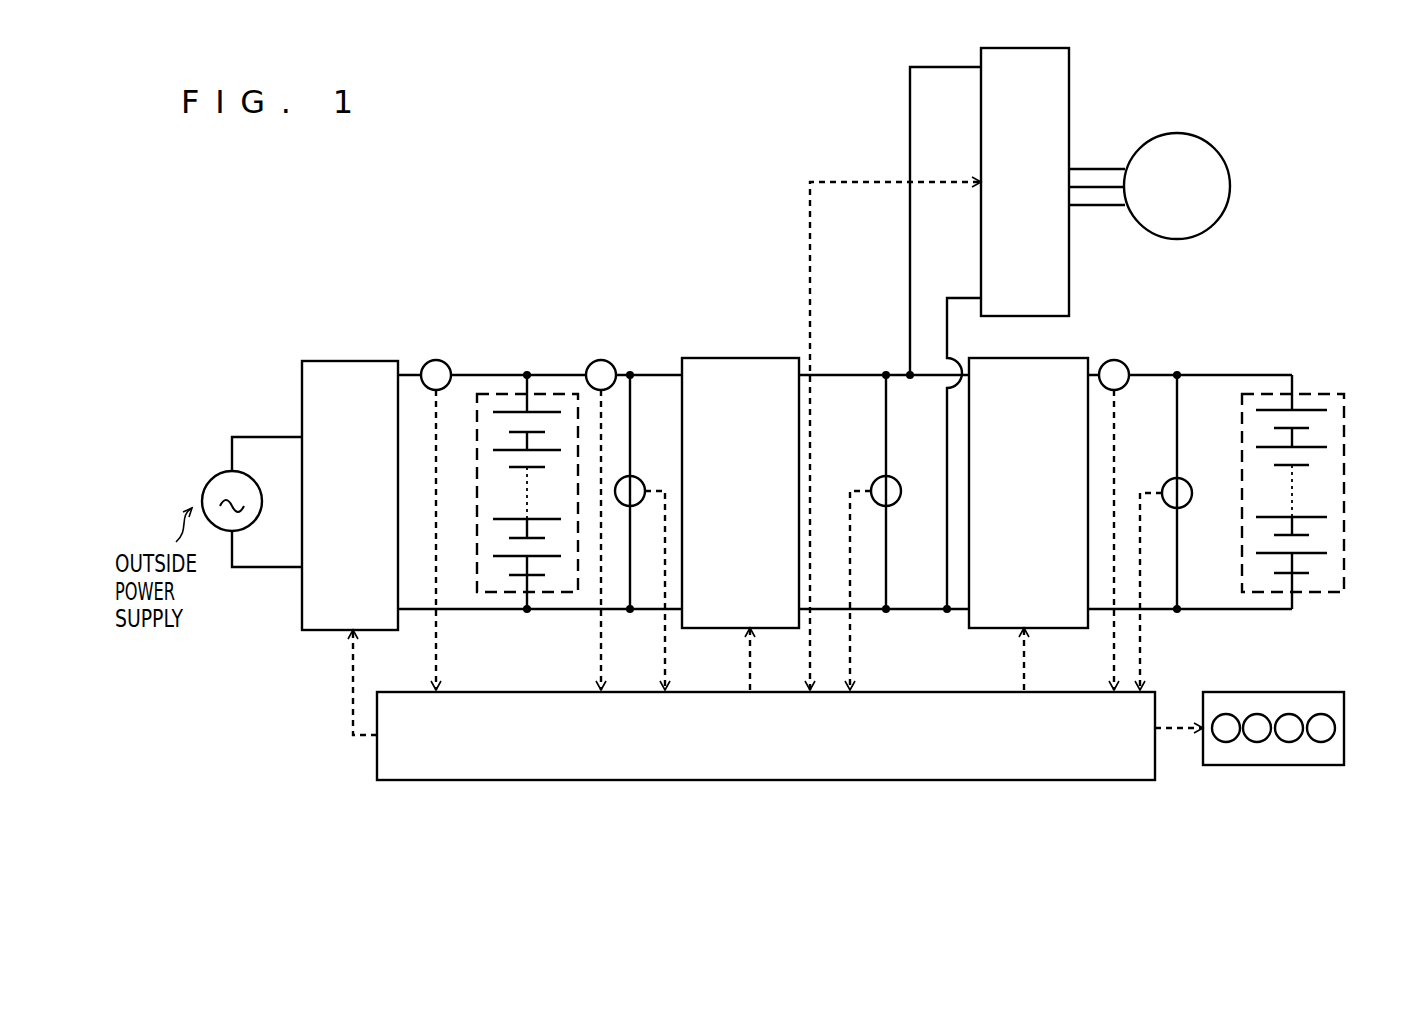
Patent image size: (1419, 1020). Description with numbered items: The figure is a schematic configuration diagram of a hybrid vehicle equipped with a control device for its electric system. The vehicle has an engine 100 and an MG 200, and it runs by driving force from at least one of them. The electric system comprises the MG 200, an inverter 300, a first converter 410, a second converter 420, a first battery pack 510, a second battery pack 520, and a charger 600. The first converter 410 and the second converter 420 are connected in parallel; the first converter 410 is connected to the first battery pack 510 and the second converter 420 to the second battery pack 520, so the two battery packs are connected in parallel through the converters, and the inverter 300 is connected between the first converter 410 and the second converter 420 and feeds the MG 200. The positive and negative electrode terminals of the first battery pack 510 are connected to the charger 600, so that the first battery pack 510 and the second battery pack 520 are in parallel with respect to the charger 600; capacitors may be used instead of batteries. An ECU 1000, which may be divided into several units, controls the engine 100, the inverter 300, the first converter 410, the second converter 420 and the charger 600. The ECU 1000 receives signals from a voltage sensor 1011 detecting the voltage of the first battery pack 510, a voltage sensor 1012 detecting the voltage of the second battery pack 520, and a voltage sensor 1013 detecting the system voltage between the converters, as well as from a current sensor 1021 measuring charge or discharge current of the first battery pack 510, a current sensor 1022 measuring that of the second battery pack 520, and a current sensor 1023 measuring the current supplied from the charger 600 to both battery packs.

The engine 100 is at (1344, 725).
The MG (Motor Generator) 200 is at (1222, 150).
The inverter 300 is at (1069, 82).
The first converter 410 is at (740, 630).
The second converter 420 is at (1040, 630).
The first battery pack 510 is at (557, 394).
The second battery pack 520 is at (1344, 493).
The charger 600 is at (355, 361).
The ECU (Electronic Control Unit) 1000 is at (765, 780).
The voltage sensor 1011 is at (638, 477).
The voltage sensor 1012 is at (1184, 478).
The voltage sensor 1013 is at (890, 476).
The current sensor 1021 is at (605, 360).
The current sensor 1022 is at (1126, 364).
The current sensor 1023 is at (437, 360).